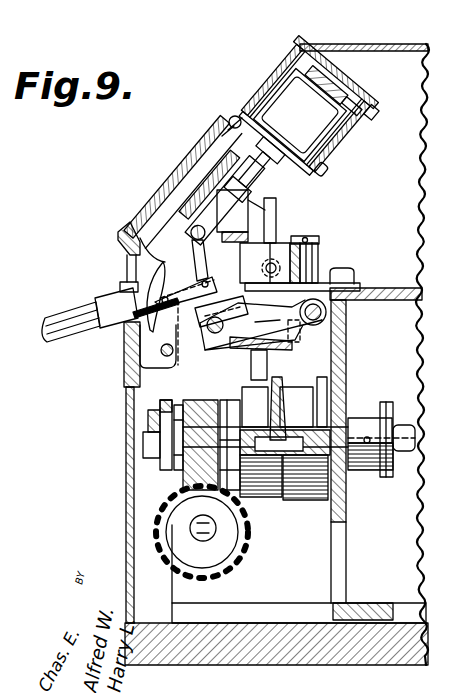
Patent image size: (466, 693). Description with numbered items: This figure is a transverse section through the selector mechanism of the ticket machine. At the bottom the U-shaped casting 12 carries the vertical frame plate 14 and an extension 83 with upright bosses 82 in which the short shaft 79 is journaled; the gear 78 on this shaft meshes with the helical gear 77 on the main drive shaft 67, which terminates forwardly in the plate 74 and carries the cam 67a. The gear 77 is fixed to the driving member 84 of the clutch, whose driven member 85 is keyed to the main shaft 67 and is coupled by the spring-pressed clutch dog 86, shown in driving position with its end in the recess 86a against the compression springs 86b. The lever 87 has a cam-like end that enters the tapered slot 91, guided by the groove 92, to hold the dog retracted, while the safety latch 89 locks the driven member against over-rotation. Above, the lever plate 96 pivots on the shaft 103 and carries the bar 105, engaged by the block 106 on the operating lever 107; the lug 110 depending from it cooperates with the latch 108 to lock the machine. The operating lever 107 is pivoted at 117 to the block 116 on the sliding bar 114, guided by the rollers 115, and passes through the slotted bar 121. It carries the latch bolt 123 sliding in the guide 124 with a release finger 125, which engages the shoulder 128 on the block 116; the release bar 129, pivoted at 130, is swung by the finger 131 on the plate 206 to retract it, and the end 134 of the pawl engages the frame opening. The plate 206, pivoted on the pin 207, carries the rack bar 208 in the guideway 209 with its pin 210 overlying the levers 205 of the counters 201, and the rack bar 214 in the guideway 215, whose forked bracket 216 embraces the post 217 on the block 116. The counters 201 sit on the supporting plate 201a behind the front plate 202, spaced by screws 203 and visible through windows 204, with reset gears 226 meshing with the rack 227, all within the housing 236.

The U-shaped casting 12 is at (374, 603).
The vertically-extending plate 14 is at (348, 511).
The main drive shaft 67 is at (143, 437).
The cam 67a is at (385, 402).
The plate 74 is at (160, 418).
The helical gear 77 is at (198, 400).
The gear 78 is at (170, 506).
The short shaft 79 is at (199, 541).
The upright bosses 82 is at (233, 590).
The extension 83 is at (289, 603).
The driving member of clutch 84 is at (228, 400).
The driven member of clutch 85 is at (302, 501).
The clutch dog 86 is at (252, 432).
The recess 86a is at (258, 498).
The compression springs 86b is at (352, 470).
The lever 87 is at (290, 388).
The safety latch 89 is at (327, 383).
The tapered slot 91 is at (282, 440).
The groove 92 is at (295, 387).
The lever plate 96 is at (210, 346).
The shaft 103 is at (326, 313).
The bar 105 is at (202, 328).
The block 106 is at (224, 313).
The operating lever 107 is at (118, 297).
The latch 108 is at (251, 366).
The lug 110 is at (266, 349).
The sliding bar 114 is at (312, 249).
The rollers 115 is at (316, 263).
The block 116 is at (296, 250).
The pivot 117 is at (268, 264).
The slotted bar 121 is at (124, 343).
The latch bolt 123 is at (214, 278).
The guide 124 is at (150, 308).
The release finger 125 is at (160, 272).
The shoulder 128 is at (264, 268).
The release bar 129 is at (125, 233).
The pivot 130 is at (170, 368).
The finger 131 is at (138, 223).
The end of pawl 134 is at (120, 285).
The counters 201 is at (300, 115).
The supporting plate 201a is at (333, 146).
The front plate 202 is at (188, 170).
The screws 203 is at (366, 113).
The windows 204 is at (288, 74).
The levers 205 is at (250, 172).
The plate 206 is at (167, 187).
The pin 207 is at (205, 231).
The rack bar 208 is at (228, 128).
The guideway 209 is at (222, 136).
The pin 210 is at (235, 118).
The rack bar 214 is at (246, 186).
The guideway 215 is at (241, 216).
The forked bracket 216 is at (276, 211).
The post 217 is at (276, 226).
The gears 226 is at (323, 81).
The rack 227 is at (348, 96).
The housing 236 is at (126, 514).